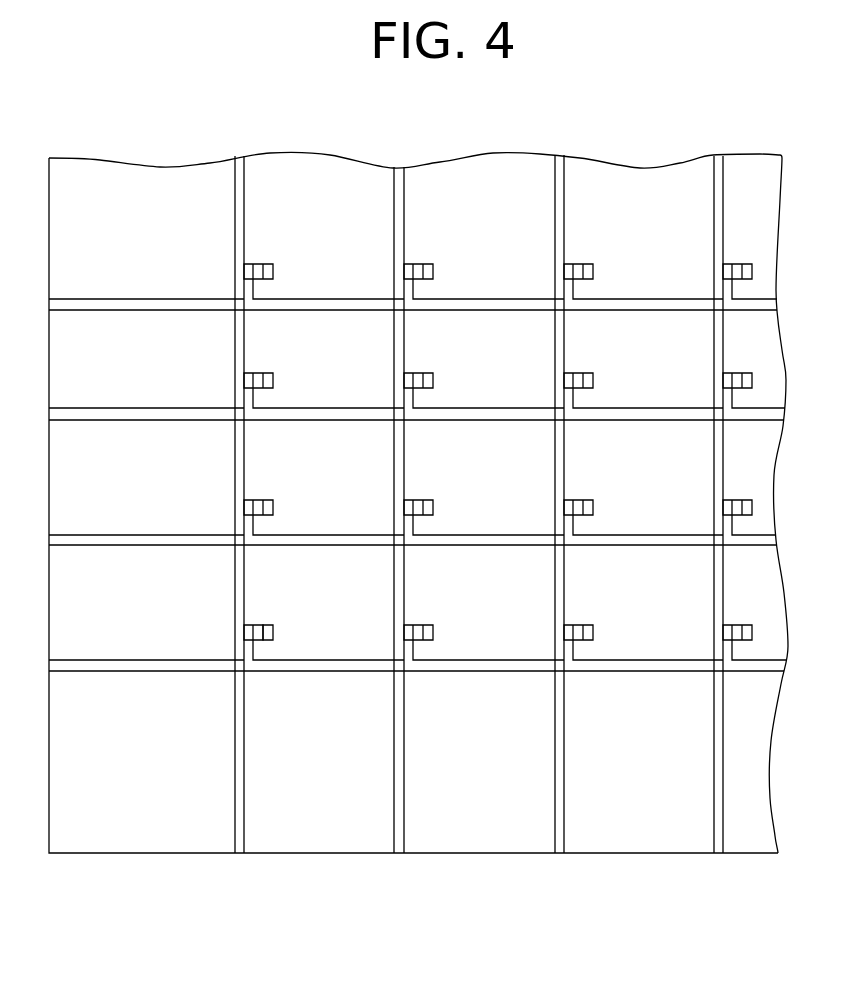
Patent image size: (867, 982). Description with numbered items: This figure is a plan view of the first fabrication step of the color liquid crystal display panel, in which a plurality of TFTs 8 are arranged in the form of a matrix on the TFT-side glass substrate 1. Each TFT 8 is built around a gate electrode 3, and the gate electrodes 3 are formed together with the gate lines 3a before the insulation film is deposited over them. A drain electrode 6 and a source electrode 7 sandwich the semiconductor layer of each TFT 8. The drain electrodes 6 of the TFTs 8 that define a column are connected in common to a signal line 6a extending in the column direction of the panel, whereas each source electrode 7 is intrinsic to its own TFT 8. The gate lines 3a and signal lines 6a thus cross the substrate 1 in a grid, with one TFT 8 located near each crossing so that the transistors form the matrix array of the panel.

The TFT-side glass substrate 1 is at (497, 840).
The gate electrode 3 is at (258, 647).
The gate line 3a is at (303, 667).
The drain electrode 6 is at (244, 631).
The signal line 6a is at (237, 716).
The source electrode 7 is at (274, 631).
The TFT 8 is at (265, 686).